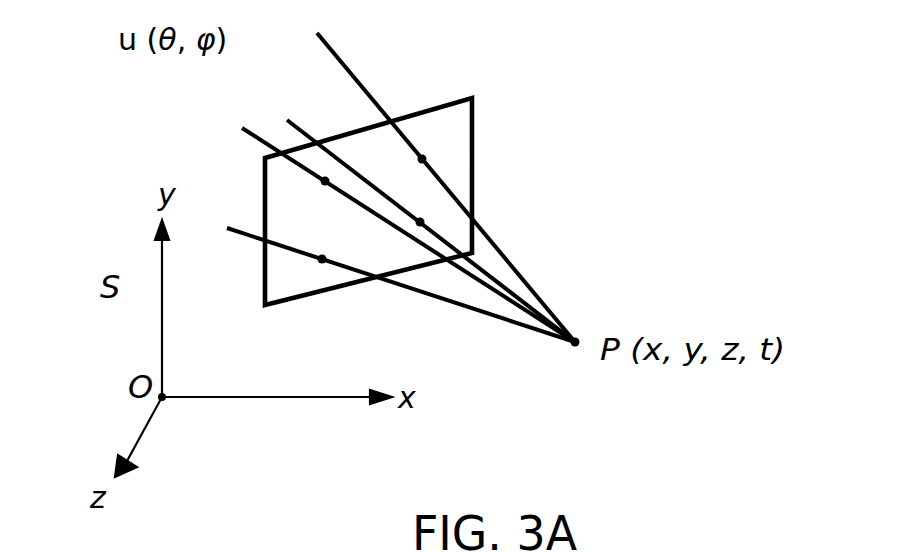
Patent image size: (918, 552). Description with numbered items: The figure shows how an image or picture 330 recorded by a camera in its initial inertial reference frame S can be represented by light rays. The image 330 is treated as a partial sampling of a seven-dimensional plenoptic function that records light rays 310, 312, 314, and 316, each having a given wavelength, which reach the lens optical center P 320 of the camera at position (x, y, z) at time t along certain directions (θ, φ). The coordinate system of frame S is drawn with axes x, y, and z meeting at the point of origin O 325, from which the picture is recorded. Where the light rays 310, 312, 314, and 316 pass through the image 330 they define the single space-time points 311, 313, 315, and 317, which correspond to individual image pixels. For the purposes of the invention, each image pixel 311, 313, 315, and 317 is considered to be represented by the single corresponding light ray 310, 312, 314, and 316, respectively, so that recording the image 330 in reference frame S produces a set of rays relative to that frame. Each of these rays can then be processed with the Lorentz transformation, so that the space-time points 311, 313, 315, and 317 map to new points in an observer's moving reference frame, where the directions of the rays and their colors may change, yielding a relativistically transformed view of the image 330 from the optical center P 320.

The light ray 310 is at (253, 240).
The space-time point 311 is at (322, 259).
The light ray 312 is at (270, 145).
The space-time point 313 is at (325, 181).
The light ray 314 is at (308, 137).
The space-time point 315 is at (420, 222).
The light ray 316 is at (340, 58).
The space-time point 317 is at (422, 159).
The lens optical center 320 is at (575, 342).
The point of origin 325 is at (166, 402).
The image 330 is at (427, 107).